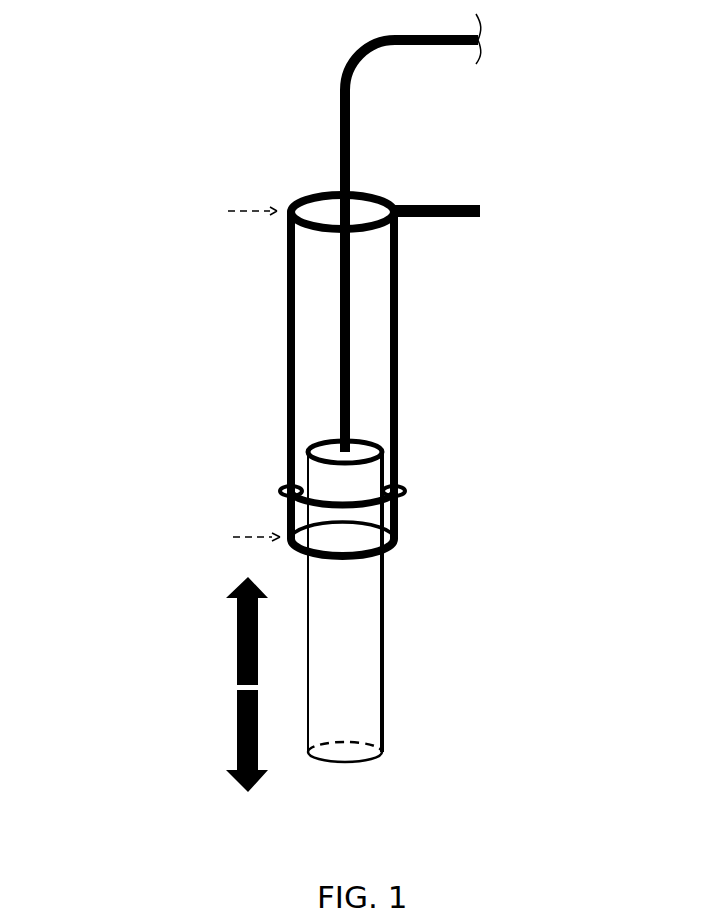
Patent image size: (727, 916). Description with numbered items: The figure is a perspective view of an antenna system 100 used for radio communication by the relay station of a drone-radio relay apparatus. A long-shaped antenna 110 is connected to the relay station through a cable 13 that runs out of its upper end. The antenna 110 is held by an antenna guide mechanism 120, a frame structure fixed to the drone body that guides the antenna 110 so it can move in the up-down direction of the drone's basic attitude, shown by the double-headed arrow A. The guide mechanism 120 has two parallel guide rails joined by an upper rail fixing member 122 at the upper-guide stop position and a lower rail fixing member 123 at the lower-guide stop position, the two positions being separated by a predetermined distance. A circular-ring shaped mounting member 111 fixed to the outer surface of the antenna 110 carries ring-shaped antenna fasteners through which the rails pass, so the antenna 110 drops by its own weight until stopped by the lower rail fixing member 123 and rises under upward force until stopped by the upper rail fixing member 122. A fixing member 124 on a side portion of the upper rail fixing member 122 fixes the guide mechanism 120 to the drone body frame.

The antenna system 100 is at (140, 342).
The cable 13 is at (339, 106).
The antenna 110 is at (347, 592).
The mounting member 111 is at (356, 497).
The antenna guide mechanism 120 is at (340, 369).
The rail fixing member 122 is at (308, 194).
The rail fixing member 123 is at (388, 548).
The fixing member 124 is at (420, 205).